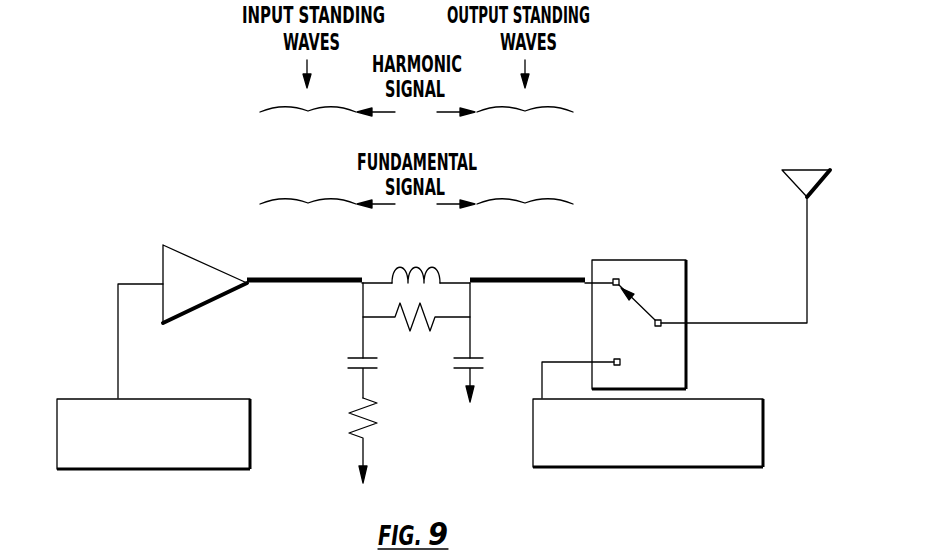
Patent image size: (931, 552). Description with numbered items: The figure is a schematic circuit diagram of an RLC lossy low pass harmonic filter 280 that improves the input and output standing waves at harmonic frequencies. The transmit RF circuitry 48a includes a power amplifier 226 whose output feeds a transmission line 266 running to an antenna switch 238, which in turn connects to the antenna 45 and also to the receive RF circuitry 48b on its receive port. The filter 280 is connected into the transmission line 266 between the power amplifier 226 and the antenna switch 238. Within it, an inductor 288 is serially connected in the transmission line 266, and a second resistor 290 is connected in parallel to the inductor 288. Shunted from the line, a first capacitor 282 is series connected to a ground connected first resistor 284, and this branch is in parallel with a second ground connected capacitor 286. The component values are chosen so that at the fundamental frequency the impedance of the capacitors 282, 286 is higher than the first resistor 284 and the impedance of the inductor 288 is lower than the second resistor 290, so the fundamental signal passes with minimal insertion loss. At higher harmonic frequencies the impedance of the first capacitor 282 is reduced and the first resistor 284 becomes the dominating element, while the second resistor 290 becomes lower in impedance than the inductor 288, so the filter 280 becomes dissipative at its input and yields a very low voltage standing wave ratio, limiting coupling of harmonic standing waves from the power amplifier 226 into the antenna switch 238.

The power amplifier 226 is at (188, 253).
The transmission line 266 is at (293, 285).
The inductor 288 is at (433, 267).
The second resistor 290 is at (407, 322).
The RLC lossy low pass filter 280 is at (443, 423).
The first capacitor 282 is at (350, 370).
The first resistor 284 is at (368, 425).
The second capacitor 286 is at (485, 372).
The antenna switch 238 is at (686, 260).
The antenna 45 is at (813, 188).
The transmit RF circuitry 48a is at (120, 471).
The receive RF circuitry 48b is at (596, 469).